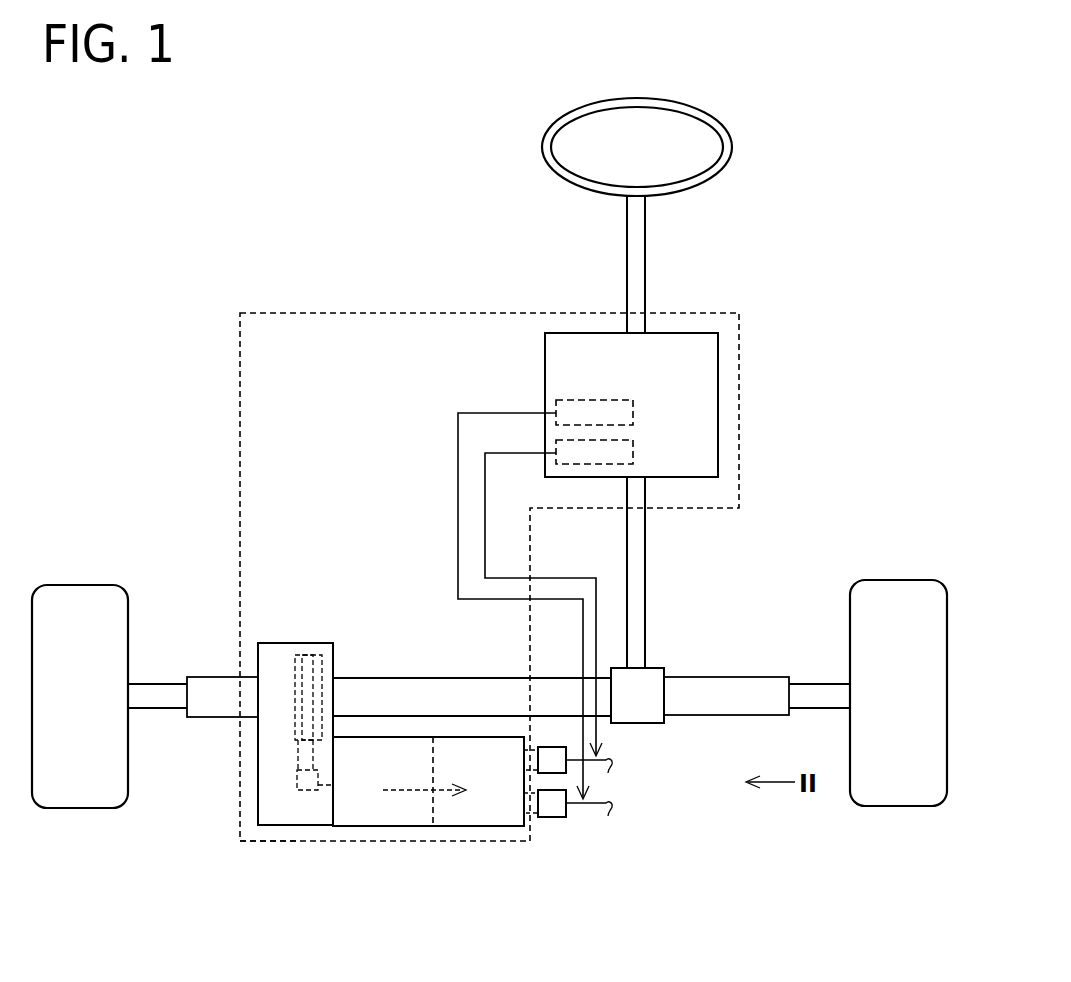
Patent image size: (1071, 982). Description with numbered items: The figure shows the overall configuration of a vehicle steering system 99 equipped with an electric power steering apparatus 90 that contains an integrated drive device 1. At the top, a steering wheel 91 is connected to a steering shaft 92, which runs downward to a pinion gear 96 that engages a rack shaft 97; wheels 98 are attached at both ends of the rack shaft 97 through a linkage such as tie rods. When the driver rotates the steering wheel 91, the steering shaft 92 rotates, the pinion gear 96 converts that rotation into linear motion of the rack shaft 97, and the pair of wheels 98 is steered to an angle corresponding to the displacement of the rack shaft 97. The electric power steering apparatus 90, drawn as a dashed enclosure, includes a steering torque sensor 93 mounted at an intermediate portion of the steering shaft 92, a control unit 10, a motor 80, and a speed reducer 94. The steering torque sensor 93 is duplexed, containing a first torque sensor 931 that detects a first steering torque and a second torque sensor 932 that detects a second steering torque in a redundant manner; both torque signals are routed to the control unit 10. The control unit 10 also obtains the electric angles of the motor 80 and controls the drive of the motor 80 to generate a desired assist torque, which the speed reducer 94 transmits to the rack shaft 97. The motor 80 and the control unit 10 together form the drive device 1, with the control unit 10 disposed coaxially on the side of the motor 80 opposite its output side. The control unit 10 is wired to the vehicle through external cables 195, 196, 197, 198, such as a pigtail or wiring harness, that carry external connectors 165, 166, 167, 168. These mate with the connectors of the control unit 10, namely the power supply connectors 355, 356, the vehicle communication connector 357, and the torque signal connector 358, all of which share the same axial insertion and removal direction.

The drive device 1 is at (416, 828).
The control unit 10 is at (475, 827).
The motor 80 is at (393, 827).
The electric power steering apparatus 90 is at (271, 312).
The steering wheel 91 is at (545, 143).
The steering shaft 92 is at (626, 275).
The steering torque sensor 93 is at (636, 566).
The first torque sensor 931 is at (633, 413).
The second torque sensor 932 is at (633, 453).
The speed reducer 94 is at (302, 643).
The pinion gear 96 is at (661, 668).
The rack shaft 97 is at (768, 677).
The wheels 98 is at (80, 585).
The steering system 99 is at (235, 847).
The external connector 168 is at (538, 705).
The torque signal connector 358 is at (528, 748).
The external cable 198 is at (592, 768).
The external cable 195 is at (684, 819).
The external cable 196 is at (684, 819).
The external cable 197 is at (592, 812).
The external connector 165 is at (624, 834).
The external connector 166 is at (624, 834).
The external connector 167 is at (552, 817).
The power supply connector 355 is at (607, 851).
The power supply connector 356 is at (607, 851).
The vehicle communication connector 357 is at (533, 817).